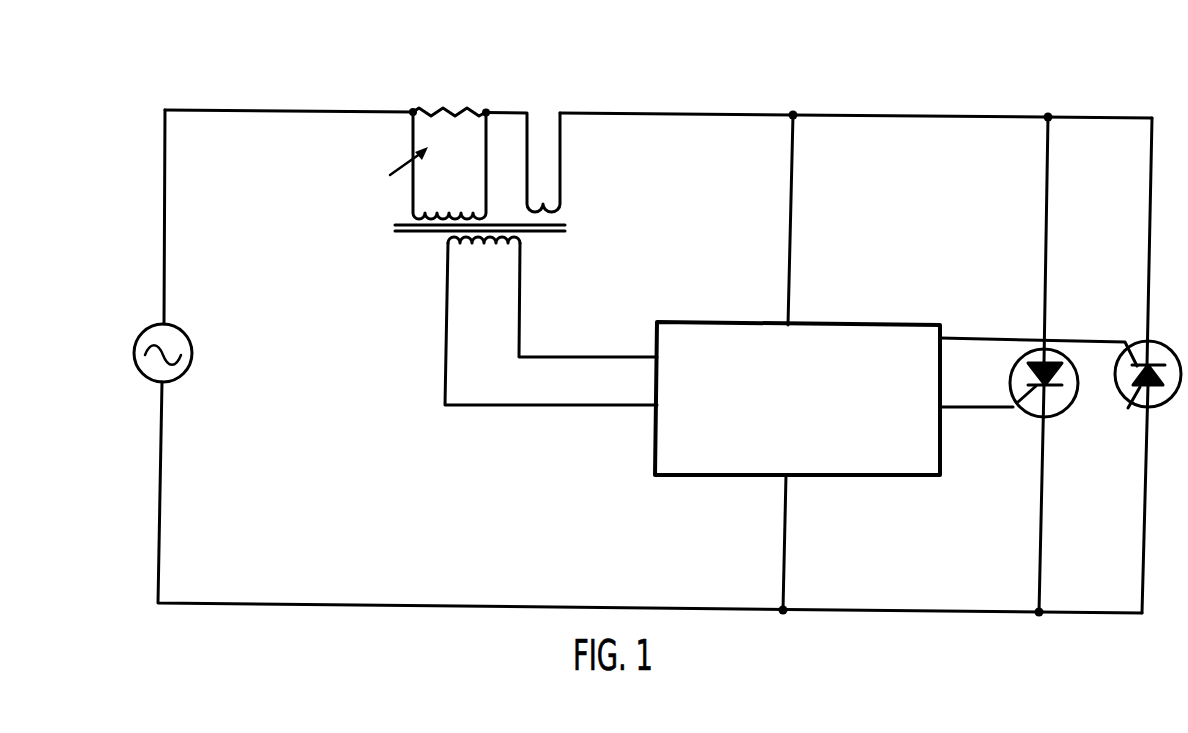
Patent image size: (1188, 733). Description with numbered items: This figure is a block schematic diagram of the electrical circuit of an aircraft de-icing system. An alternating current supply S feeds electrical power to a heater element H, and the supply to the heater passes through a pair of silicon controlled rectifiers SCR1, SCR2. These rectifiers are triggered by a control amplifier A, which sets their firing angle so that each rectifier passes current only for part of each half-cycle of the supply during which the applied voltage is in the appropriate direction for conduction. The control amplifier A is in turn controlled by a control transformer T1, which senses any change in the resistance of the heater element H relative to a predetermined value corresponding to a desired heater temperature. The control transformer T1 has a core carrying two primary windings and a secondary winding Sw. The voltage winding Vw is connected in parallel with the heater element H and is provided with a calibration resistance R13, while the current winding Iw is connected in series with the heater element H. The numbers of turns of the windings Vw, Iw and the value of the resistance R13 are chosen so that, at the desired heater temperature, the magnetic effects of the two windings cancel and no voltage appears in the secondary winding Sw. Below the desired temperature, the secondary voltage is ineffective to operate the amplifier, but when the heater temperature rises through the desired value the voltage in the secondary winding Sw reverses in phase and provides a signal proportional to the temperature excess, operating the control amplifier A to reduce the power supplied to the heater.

The alternating current supply S is at (170, 335).
The heater element H is at (463, 106).
The calibration resistance R13 is at (390, 175).
The voltage winding Vw is at (452, 208).
The current winding Iw is at (562, 191).
The control transformer T1 is at (553, 233).
The secondary winding Sw is at (551, 321).
The control amplifier A is at (840, 462).
The silicon controlled rectifier SCR1 is at (1030, 408).
The silicon controlled rectifier SCR2 is at (1128, 408).